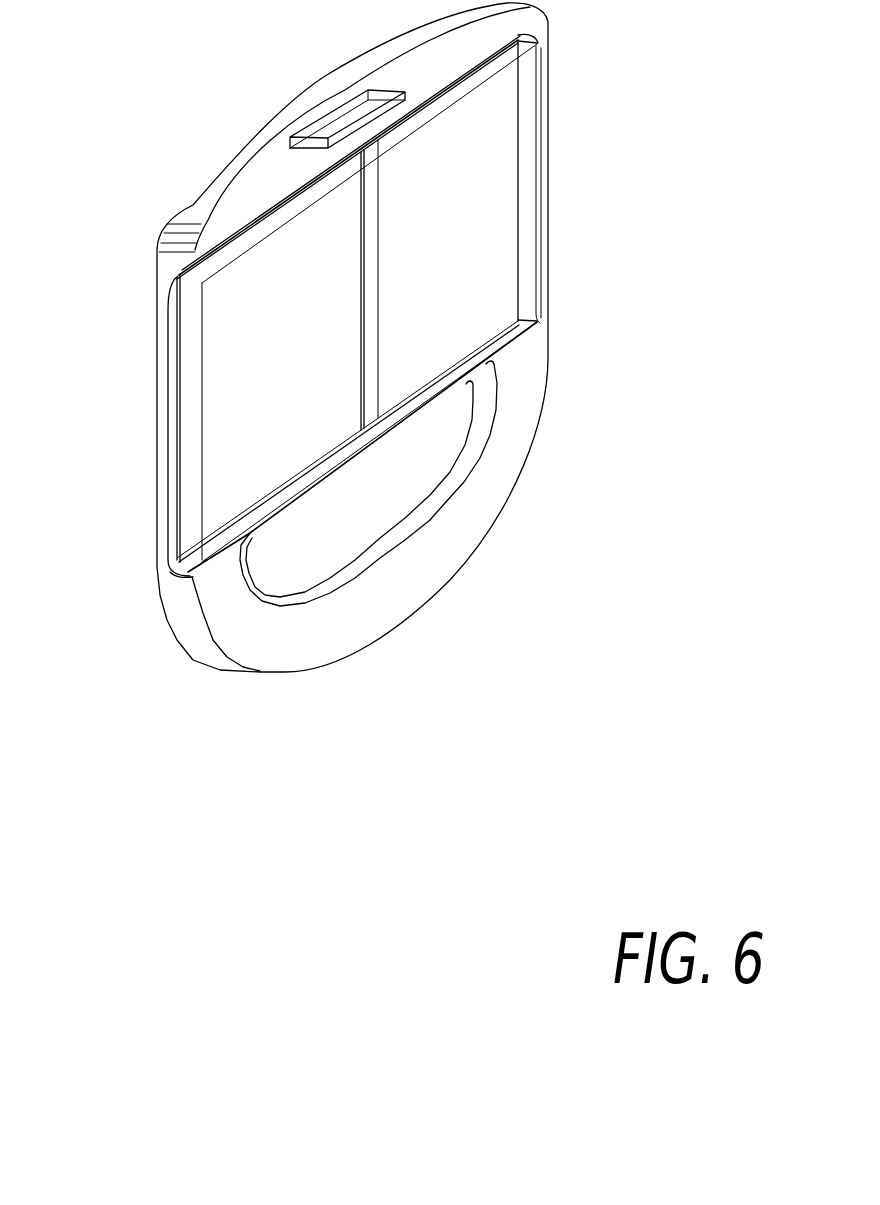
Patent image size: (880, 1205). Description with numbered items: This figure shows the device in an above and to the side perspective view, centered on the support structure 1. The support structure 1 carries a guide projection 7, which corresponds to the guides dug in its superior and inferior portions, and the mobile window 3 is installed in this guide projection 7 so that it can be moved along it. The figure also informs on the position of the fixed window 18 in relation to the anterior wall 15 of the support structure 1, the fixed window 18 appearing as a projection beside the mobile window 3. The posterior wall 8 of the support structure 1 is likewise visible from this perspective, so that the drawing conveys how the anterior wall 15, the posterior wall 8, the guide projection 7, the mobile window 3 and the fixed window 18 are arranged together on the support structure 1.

The support structure 1 is at (525, 21).
The mobile window 3 is at (502, 160).
The guide projection 7 is at (192, 574).
The posterior wall 8 is at (518, 355).
The anterior wall 15 is at (190, 177).
The fixed window 18 is at (177, 342).